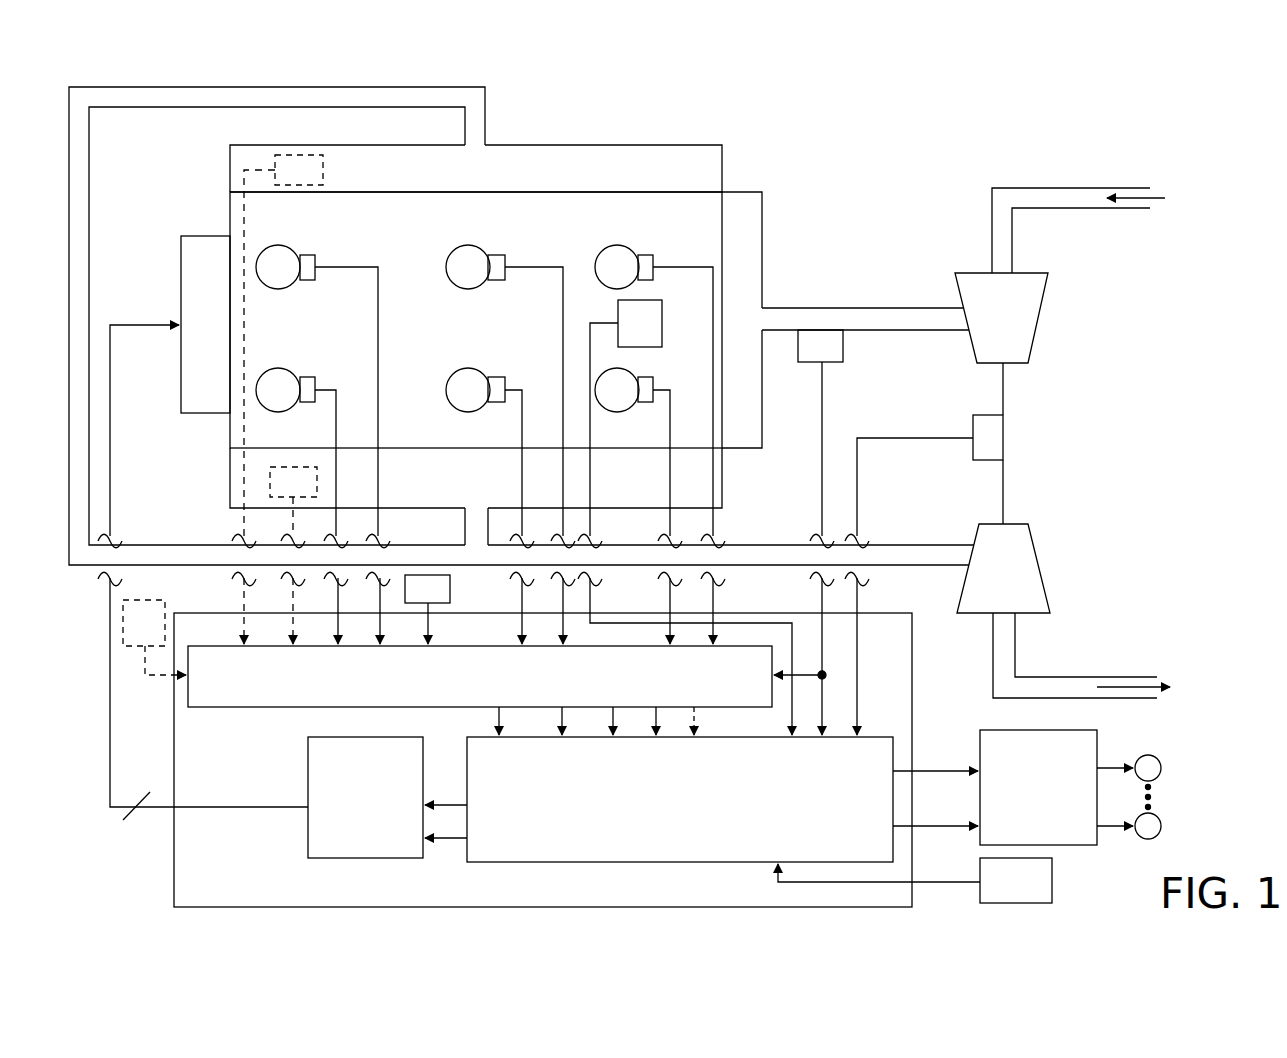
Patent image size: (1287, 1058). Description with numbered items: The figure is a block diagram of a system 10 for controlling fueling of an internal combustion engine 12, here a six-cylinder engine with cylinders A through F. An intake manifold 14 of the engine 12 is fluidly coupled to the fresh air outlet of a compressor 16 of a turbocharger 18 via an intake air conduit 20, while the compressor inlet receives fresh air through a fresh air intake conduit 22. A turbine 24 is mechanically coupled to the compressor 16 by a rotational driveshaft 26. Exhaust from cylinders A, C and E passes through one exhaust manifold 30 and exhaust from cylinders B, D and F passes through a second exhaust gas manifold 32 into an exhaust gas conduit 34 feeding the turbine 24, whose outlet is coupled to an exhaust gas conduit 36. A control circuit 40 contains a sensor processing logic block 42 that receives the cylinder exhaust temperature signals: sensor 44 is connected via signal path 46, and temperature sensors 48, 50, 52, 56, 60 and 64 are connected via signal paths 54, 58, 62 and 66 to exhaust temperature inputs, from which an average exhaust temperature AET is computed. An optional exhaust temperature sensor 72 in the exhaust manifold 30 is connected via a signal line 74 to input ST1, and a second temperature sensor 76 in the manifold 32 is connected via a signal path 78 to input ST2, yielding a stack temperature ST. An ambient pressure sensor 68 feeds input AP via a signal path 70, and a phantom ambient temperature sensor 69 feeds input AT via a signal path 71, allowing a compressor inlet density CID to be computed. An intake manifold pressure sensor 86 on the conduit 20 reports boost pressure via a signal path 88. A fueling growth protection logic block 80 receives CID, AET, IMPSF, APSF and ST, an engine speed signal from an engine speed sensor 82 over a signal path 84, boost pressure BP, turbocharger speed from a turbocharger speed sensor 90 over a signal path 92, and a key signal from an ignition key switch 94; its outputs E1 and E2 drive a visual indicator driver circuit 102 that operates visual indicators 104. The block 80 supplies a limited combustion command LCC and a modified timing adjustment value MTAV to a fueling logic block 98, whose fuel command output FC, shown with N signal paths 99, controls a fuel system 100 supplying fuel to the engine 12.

The system 10 is at (915, 176).
The engine 12 is at (228, 437).
The intake manifold 14 is at (762, 221).
The compressor 16 is at (1042, 293).
The turbocharger 18 is at (1037, 410).
The intake air conduit 20 is at (876, 306).
The fresh air intake conduit 22 is at (1072, 187).
The turbine 24 is at (1035, 554).
The rotational driveshaft 26 is at (1005, 491).
The exhaust manifold 30 is at (723, 156).
The second exhaust gas manifold 32 is at (228, 482).
The exhaust gas conduit 34 is at (907, 543).
The exhaust gas conduit 36 is at (1015, 656).
The control circuit 40 is at (912, 696).
The sensor processing logic block 42 is at (227, 708).
The exhaust gas temperature sensor 44 is at (306, 254).
The signal path 46 is at (355, 265).
The temperature sensor 48 is at (306, 376).
The temperature sensor 50 is at (333, 386).
The temperature sensor 52 is at (497, 254).
The signal path 54 is at (537, 265).
The temperature sensor 56 is at (500, 376).
The signal path 58 is at (521, 434).
The temperature sensor 60 is at (640, 254).
The signal path 62 is at (686, 265).
The temperature sensor 64 is at (656, 381).
The signal path 66 is at (669, 434).
The pressure sensor 68 is at (450, 591).
The temperature sensor 69 is at (150, 593).
The signal path 70 is at (430, 621).
The signal path 71 is at (163, 681).
The exhaust temperature sensor 72 is at (323, 172).
The signal line 74 is at (244, 237).
The second temperature sensor 76 is at (297, 467).
The signal path 78 is at (300, 607).
The fueling growth protection logic block 80 is at (665, 862).
The engine speed sensor 82 is at (662, 318).
The signal path 84 is at (590, 597).
The intake manifold pressure sensor 86 is at (845, 341).
The signal path 88 is at (822, 386).
The turbocharger speed sensor 90 is at (976, 414).
The signal path 92 is at (900, 437).
The ignition key switch 94 is at (1052, 871).
The fueling logic block 98 is at (307, 827).
The fuel command signal path 99 is at (109, 689).
The fuel system 100 is at (200, 235).
The visual indicator driver circuit 102 is at (1097, 742).
The visual indicators 104 is at (1162, 763).